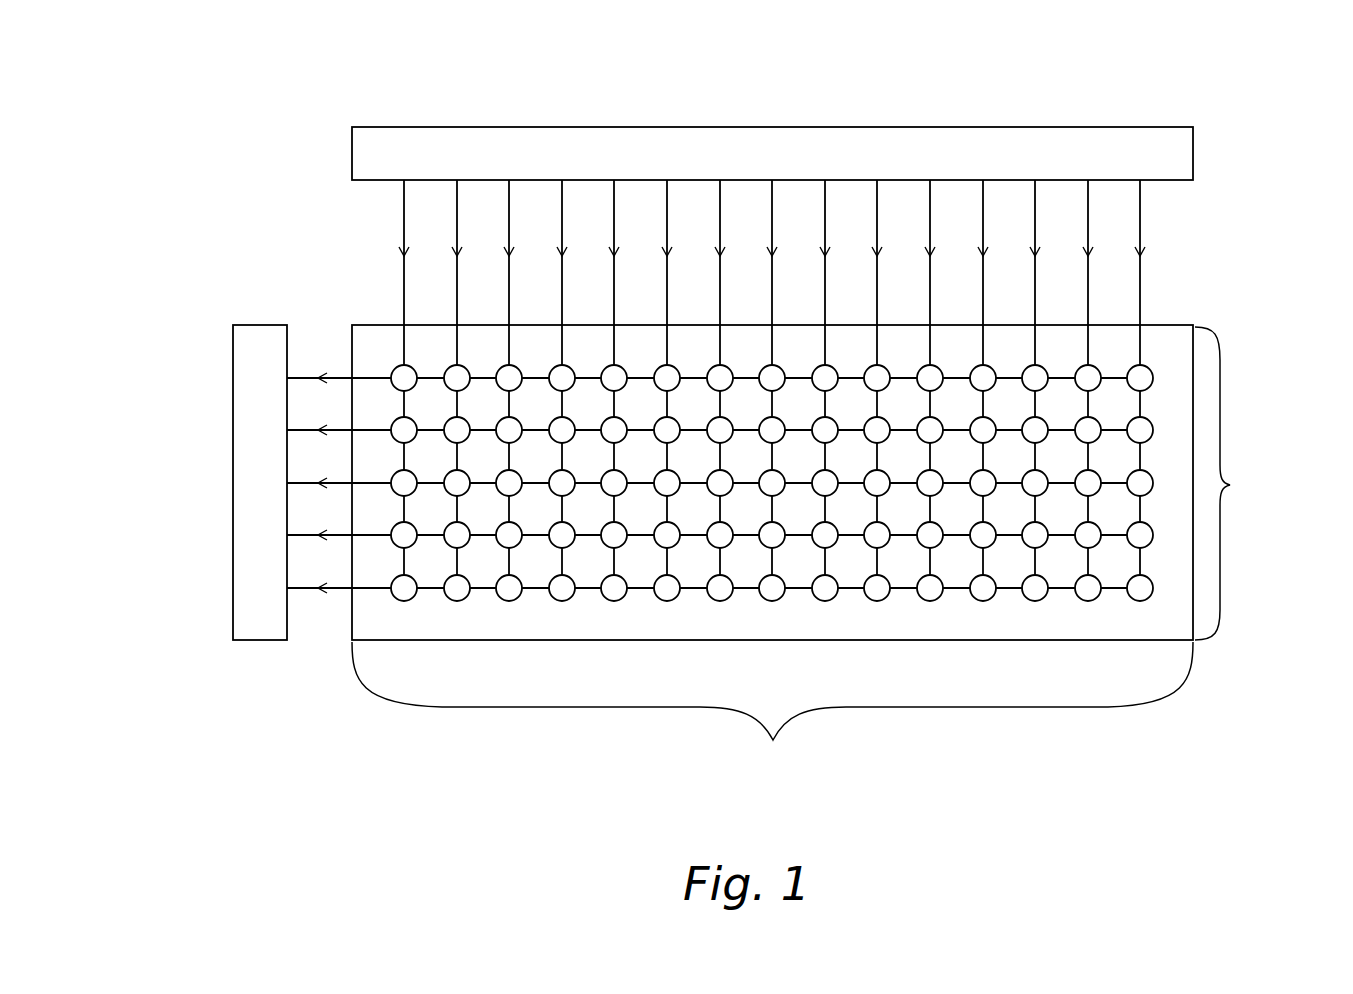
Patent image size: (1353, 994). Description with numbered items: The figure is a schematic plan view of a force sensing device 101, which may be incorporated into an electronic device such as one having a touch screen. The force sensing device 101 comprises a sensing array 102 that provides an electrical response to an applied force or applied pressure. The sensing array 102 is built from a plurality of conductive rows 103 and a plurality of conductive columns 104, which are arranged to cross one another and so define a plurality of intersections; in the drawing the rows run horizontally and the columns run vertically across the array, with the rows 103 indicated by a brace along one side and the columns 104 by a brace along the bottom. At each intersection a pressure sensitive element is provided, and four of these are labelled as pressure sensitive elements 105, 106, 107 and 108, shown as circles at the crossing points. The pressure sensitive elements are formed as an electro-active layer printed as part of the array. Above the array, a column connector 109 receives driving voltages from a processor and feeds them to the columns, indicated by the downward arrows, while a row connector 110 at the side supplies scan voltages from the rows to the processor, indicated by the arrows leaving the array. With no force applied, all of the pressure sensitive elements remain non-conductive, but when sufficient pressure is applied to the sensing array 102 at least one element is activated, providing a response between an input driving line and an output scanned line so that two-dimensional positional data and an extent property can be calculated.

The force sensing device 101 is at (1244, 98).
The sensing array 102 is at (694, 426).
The conductive rows 103 is at (1230, 485).
The conductive columns 104 is at (773, 740).
The pressure sensitive element 105 is at (403, 377).
The pressure sensitive element 106 is at (453, 375).
The pressure sensitive element 107 is at (407, 430).
The pressure sensitive element 108 is at (453, 430).
The column connector 109 is at (845, 132).
The row connector 110 is at (233, 483).